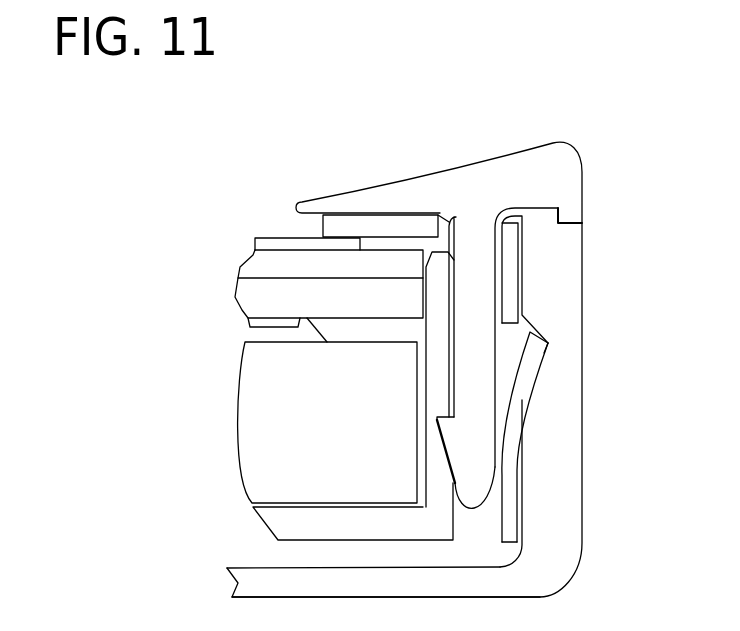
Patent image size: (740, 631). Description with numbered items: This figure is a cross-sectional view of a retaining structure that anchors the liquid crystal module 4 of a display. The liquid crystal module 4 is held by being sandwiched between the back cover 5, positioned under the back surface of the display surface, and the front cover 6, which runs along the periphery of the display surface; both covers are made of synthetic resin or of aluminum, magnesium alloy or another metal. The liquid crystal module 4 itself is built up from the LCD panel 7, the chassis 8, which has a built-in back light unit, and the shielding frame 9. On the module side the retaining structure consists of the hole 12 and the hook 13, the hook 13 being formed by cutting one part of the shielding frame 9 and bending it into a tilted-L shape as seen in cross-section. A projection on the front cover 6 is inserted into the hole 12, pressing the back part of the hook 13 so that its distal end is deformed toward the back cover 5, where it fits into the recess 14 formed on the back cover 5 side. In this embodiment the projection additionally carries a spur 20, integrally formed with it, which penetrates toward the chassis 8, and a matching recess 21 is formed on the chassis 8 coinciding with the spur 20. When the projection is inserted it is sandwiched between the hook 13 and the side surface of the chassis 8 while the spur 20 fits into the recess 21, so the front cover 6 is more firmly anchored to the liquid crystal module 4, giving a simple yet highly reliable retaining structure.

The liquid crystal module 4 is at (175, 417).
The back cover 5 is at (562, 525).
The front cover 6 is at (515, 152).
The LCD panel 7 is at (250, 296).
The chassis 8 is at (282, 522).
The shielding frame 9 is at (377, 222).
The hole 12 is at (442, 222).
The hook 13 is at (520, 367).
The recess 14 is at (545, 342).
The spur 20 is at (452, 440).
The recess 21 is at (433, 423).